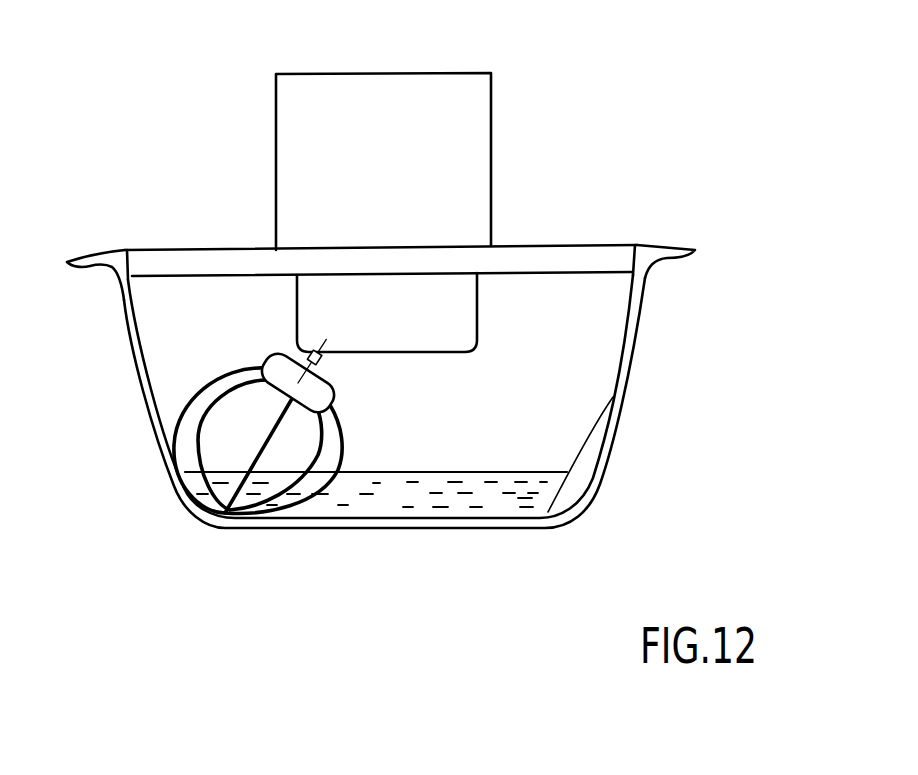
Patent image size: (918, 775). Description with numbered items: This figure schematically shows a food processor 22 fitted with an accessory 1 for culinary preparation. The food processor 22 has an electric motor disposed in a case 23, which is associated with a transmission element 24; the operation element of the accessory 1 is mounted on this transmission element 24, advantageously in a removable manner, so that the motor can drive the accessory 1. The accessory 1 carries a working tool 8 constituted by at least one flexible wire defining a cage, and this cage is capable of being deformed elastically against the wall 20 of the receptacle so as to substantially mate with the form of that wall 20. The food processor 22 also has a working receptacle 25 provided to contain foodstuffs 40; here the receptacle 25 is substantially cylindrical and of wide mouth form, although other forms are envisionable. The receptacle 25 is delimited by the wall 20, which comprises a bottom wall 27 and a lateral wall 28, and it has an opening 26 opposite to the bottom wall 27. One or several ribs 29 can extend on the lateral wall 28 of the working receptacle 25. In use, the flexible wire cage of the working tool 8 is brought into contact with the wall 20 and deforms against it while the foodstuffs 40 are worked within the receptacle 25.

The accessory 1 is at (208, 355).
The working tool 8 is at (352, 443).
The wall 20 is at (190, 498).
The food processor 22 is at (596, 145).
The case 23 is at (298, 118).
The transmission element 24 is at (423, 330).
The working receptacle 25 is at (604, 494).
The opening 26 is at (582, 298).
The bottom wall 27 is at (427, 517).
The lateral wall 28 is at (170, 482).
The rib 29 is at (593, 437).
The foodstuffs 40 is at (502, 498).